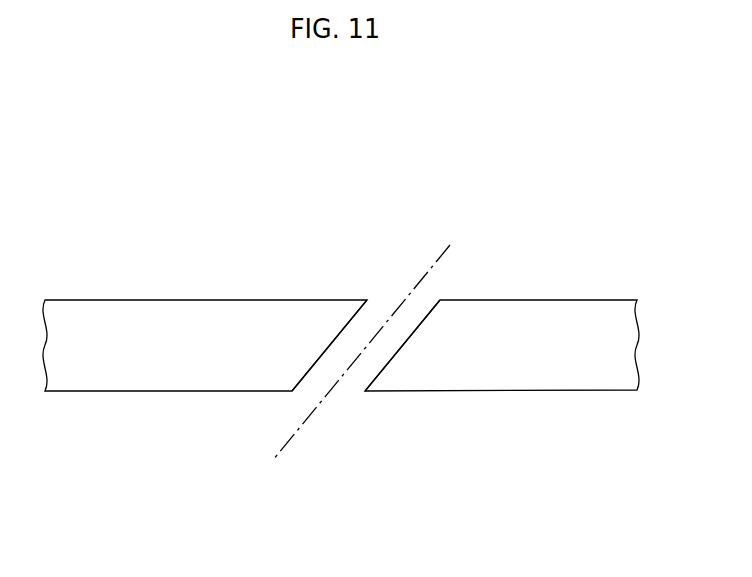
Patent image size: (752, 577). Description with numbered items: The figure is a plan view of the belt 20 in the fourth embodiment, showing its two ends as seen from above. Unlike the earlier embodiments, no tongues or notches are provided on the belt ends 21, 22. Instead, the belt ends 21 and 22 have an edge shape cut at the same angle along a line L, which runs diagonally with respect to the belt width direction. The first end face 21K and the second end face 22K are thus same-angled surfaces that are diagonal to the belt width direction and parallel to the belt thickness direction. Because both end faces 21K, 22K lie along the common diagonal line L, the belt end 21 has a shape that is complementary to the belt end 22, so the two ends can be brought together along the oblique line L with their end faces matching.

The belt 20 is at (341, 294).
The belt end 21 is at (547, 292).
The belt end 22 is at (330, 292).
The first end face 21K is at (381, 371).
The second end face 22K is at (311, 377).
The line L is at (433, 270).